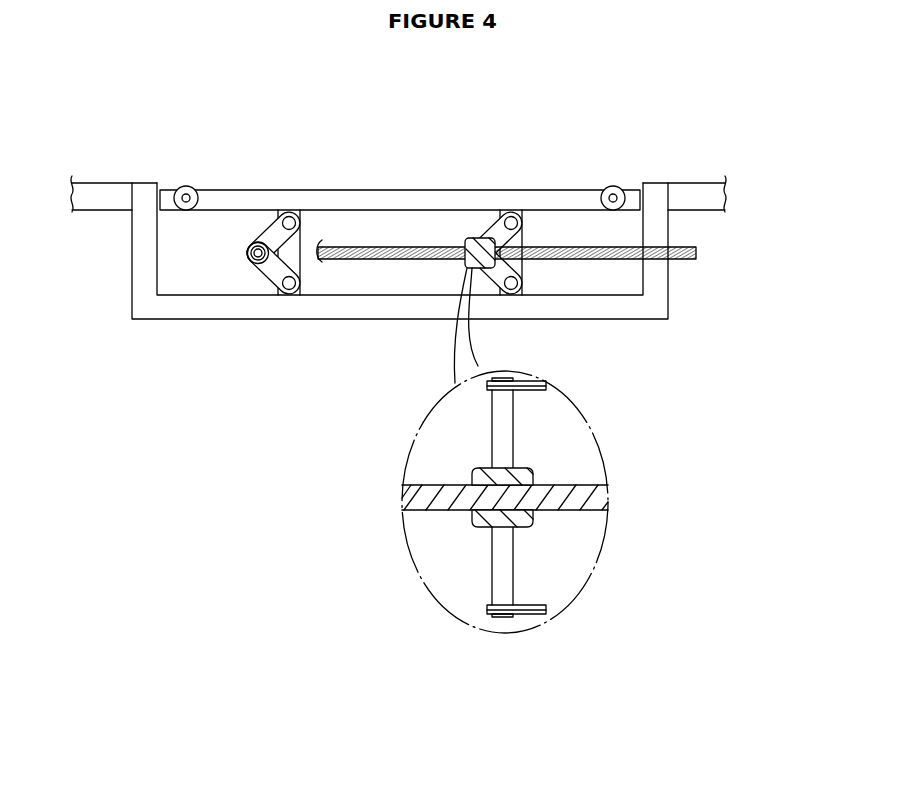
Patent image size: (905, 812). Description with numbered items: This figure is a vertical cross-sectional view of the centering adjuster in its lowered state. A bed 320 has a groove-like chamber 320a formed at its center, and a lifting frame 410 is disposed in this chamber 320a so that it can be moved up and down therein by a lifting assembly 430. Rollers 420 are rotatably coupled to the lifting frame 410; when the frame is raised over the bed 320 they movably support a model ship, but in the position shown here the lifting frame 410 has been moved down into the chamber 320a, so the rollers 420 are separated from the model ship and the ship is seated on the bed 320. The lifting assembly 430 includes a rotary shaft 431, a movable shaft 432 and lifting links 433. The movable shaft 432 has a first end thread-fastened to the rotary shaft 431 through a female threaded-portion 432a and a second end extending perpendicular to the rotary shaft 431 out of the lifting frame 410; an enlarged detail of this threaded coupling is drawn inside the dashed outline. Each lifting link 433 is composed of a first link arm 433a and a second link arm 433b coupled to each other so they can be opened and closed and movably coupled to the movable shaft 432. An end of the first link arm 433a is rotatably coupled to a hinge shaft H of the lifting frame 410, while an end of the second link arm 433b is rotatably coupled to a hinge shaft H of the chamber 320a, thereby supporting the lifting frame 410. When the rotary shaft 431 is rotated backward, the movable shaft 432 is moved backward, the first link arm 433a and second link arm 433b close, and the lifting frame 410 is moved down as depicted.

The bed 320 is at (95, 200).
The chamber 320a is at (175, 313).
The lifting frame 410 is at (243, 194).
The rollers 420 is at (186, 186).
The lifting assembly 430 is at (472, 679).
The rotary shaft 431 is at (403, 248).
The movable shaft 432 is at (413, 405).
The female threaded-portion 432a is at (473, 238).
The lifting link 433 is at (442, 442).
The first link arm 433a is at (301, 241).
The second link arm 433b is at (268, 273).
The hinge shaft H is at (292, 214).